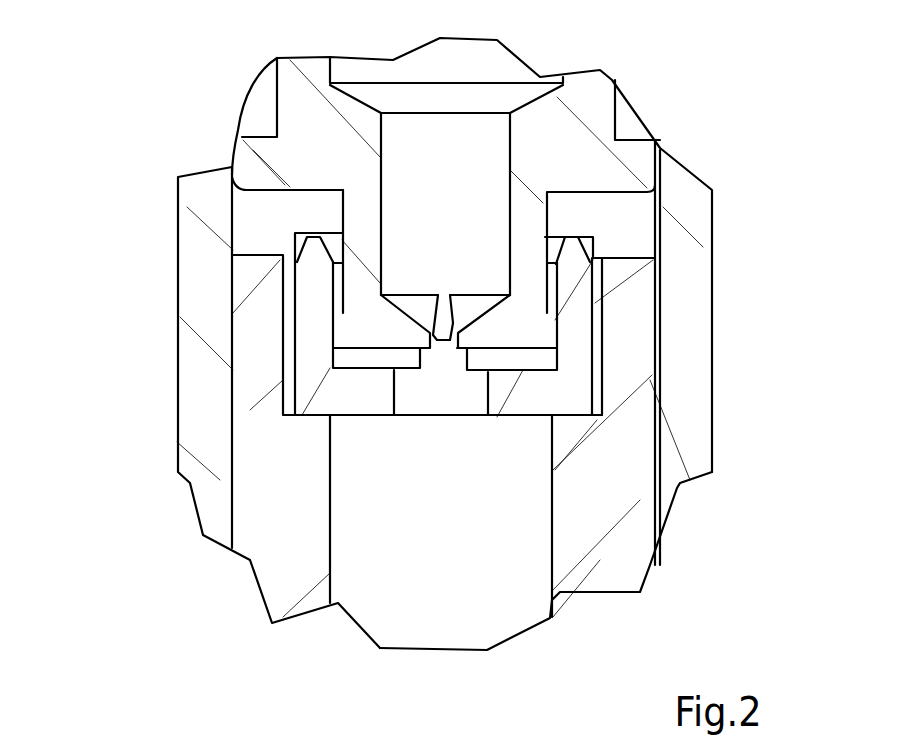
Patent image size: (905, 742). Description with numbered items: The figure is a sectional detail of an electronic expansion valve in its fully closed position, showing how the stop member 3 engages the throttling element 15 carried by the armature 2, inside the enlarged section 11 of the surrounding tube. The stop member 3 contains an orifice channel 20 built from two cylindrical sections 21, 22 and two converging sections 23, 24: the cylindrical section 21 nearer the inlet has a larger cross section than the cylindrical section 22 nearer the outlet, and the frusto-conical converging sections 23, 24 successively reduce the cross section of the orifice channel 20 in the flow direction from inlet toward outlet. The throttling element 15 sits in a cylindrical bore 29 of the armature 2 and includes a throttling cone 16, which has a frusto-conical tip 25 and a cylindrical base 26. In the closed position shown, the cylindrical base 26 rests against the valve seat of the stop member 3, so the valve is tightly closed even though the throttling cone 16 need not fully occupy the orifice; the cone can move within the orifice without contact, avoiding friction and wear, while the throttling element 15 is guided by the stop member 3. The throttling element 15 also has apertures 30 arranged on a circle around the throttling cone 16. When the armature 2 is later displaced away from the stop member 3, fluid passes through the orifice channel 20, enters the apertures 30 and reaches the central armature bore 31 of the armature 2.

The armature 2 is at (578, 502).
The stop member 3 is at (590, 115).
The enlarged section 11 is at (200, 385).
The throttling element 15 is at (349, 391).
The throttling cone 16 is at (460, 357).
The orifice channel 20 is at (447, 140).
The cylindrical section 21 is at (462, 58).
The cylindrical section 22 is at (417, 235).
The converging section 23 is at (417, 103).
The converging section 24 is at (380, 287).
The frusto-conical tip 25 is at (458, 330).
The cylindrical base 26 is at (450, 357).
The cylindrical bore 29 is at (287, 332).
The apertures 30 is at (445, 337).
The central armature bore 31 is at (480, 567).